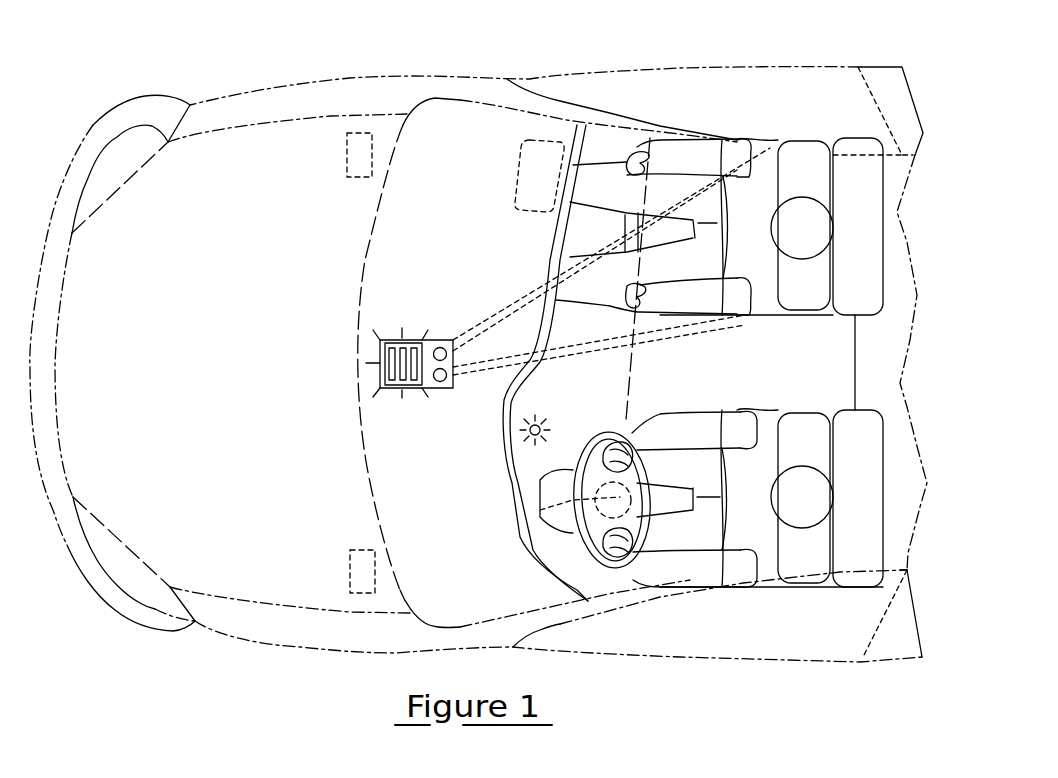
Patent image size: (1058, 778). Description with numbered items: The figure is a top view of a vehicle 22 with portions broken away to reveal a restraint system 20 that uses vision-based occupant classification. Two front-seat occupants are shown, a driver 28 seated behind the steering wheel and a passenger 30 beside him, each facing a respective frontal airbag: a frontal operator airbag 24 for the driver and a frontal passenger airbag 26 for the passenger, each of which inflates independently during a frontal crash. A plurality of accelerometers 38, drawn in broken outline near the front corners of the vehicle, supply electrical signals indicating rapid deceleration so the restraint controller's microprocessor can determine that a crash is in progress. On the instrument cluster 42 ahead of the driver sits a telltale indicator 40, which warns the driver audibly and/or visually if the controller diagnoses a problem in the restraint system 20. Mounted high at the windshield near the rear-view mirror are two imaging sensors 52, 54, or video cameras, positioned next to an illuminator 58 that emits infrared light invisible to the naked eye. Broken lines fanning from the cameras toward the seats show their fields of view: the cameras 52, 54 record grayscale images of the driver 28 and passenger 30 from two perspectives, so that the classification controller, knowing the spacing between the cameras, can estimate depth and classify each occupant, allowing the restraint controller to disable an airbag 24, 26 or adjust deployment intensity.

The restraint system 20 is at (406, 250).
The vehicle 22 is at (347, 66).
The frontal operator airbag 24 is at (517, 528).
The frontal passenger airbag 26 is at (523, 173).
The driver 28 is at (803, 430).
The passenger 30 is at (803, 167).
The accelerometers 38 is at (347, 153).
The telltale indicator 40 is at (530, 432).
The instrument cluster 42 is at (533, 483).
The imaging sensor 52 is at (440, 382).
The imaging sensor 54 is at (438, 347).
The illuminator 58 is at (413, 340).